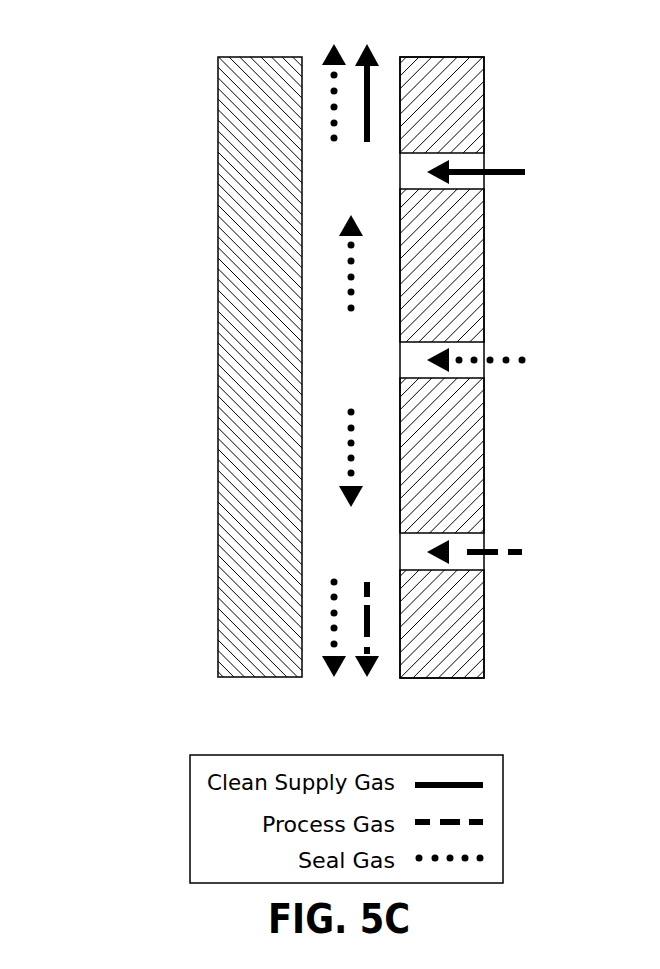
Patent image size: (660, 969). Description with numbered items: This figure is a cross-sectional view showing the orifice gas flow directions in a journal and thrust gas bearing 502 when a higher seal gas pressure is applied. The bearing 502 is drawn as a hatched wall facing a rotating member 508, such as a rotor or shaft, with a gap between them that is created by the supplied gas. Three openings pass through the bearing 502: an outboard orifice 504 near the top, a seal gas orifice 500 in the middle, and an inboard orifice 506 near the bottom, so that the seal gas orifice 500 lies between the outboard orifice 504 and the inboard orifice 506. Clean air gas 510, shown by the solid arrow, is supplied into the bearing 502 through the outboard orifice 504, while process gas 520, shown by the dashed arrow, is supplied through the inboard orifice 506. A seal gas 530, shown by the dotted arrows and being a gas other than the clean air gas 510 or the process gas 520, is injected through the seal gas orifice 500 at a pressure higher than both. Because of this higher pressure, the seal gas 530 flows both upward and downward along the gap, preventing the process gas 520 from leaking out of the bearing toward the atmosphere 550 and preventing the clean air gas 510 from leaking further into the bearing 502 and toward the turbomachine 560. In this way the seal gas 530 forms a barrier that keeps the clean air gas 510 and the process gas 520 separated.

The seal gas orifice 500 is at (448, 341).
The bearing 502 is at (470, 88).
The outboard orifice 504 is at (446, 192).
The inboard orifice 506 is at (445, 531).
The rotating member 508 is at (252, 137).
The clean air gas 510 is at (368, 117).
The process gas 520 is at (370, 627).
The seal gas 530 is at (334, 582).
The atmosphere 550 is at (322, 21).
The turbomachine 560 is at (318, 723).